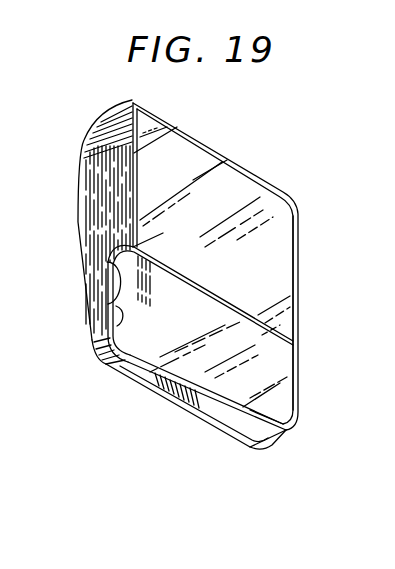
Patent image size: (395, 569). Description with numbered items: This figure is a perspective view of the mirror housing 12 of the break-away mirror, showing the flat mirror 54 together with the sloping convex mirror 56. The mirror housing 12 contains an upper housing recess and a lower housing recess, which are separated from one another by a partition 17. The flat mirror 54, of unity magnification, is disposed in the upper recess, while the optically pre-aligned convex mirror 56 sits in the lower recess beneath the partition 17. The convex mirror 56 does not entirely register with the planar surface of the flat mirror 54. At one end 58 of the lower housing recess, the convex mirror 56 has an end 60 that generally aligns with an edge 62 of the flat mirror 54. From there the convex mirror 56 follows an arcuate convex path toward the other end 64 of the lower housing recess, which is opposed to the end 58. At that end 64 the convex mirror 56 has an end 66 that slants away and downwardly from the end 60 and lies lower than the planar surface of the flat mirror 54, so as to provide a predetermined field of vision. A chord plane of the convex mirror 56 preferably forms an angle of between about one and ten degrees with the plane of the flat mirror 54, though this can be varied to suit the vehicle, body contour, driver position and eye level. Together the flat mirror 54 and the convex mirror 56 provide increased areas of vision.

The mirror housing 12 is at (203, 199).
The partition 17 is at (107, 270).
The flat mirror 54 is at (106, 277).
The other end of the lower housing recess 64 is at (121, 313).
The end of the convex mirror 66 is at (95, 337).
The convex mirror 56 is at (193, 357).
The edge of the flat mirror 62 is at (288, 298).
The end of the convex mirror 60 is at (278, 414).
The end of the lower housing recess 58 is at (298, 427).